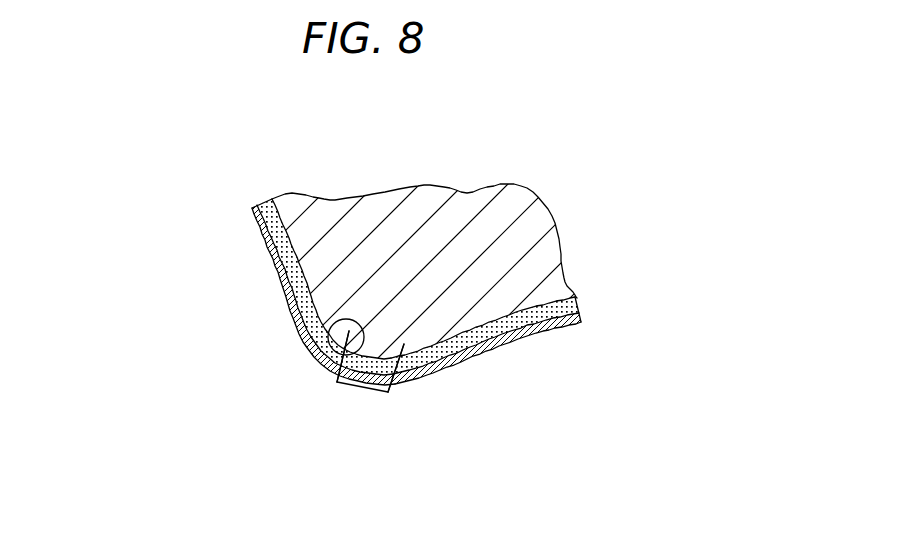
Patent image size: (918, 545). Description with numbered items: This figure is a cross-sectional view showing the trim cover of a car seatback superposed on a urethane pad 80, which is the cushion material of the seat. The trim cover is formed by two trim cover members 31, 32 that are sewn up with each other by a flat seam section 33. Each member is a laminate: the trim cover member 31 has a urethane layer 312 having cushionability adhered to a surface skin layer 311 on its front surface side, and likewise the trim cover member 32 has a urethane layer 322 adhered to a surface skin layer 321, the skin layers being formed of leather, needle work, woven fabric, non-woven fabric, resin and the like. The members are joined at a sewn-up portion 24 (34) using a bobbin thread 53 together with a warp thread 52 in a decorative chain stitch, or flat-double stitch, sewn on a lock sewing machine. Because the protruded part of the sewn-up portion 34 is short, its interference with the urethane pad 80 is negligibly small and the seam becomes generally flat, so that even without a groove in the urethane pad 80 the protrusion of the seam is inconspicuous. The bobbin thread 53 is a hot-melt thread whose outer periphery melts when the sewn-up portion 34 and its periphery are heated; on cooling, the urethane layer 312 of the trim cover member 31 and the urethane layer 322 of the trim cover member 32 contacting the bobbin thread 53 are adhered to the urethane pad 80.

The urethane pad 80 is at (534, 223).
The trim cover member 32 is at (272, 292).
The surface skin layer 321 is at (279, 288).
The urethane layer 322 is at (287, 309).
The trim cover member 31 is at (493, 380).
The surface skin layer 311 is at (596, 412).
The urethane layer 312 is at (544, 327).
The bobbin thread 53 is at (318, 366).
The flat seam section 33 is at (397, 396).
The sewn-up portion 24 is at (382, 383).
The sewn-up portion 34 is at (343, 356).
The warp thread 52 is at (410, 378).